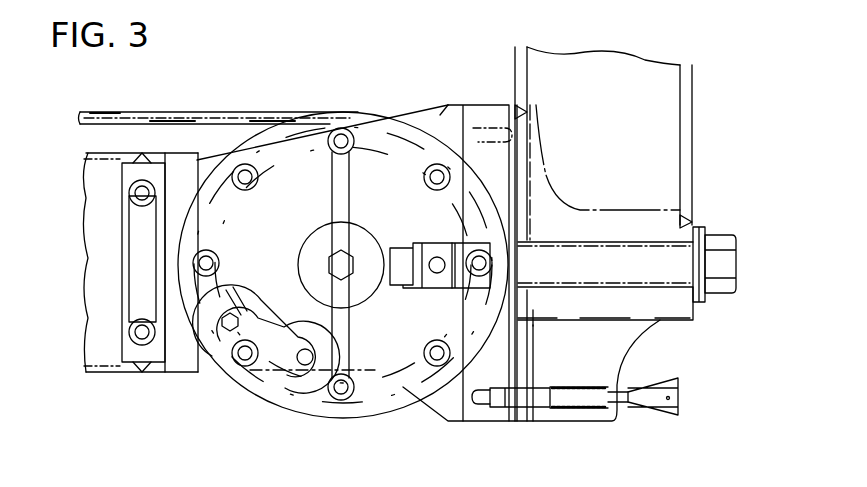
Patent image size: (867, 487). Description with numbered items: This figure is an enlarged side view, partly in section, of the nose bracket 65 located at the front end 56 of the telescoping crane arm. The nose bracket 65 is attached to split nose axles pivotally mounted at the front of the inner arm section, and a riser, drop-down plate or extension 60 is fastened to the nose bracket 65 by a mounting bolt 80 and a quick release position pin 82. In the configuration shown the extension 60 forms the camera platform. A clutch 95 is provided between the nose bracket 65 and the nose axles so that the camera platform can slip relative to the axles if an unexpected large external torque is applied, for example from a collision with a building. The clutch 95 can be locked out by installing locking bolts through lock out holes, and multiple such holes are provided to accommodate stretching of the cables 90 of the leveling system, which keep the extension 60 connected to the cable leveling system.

The front end 56 is at (104, 348).
The extension 60 is at (613, 73).
The nose bracket 65 is at (444, 122).
The mounting bolt 80 is at (624, 275).
The quick release position pin 82 is at (648, 402).
The cables 90 is at (244, 120).
The clutch 95 is at (312, 263).